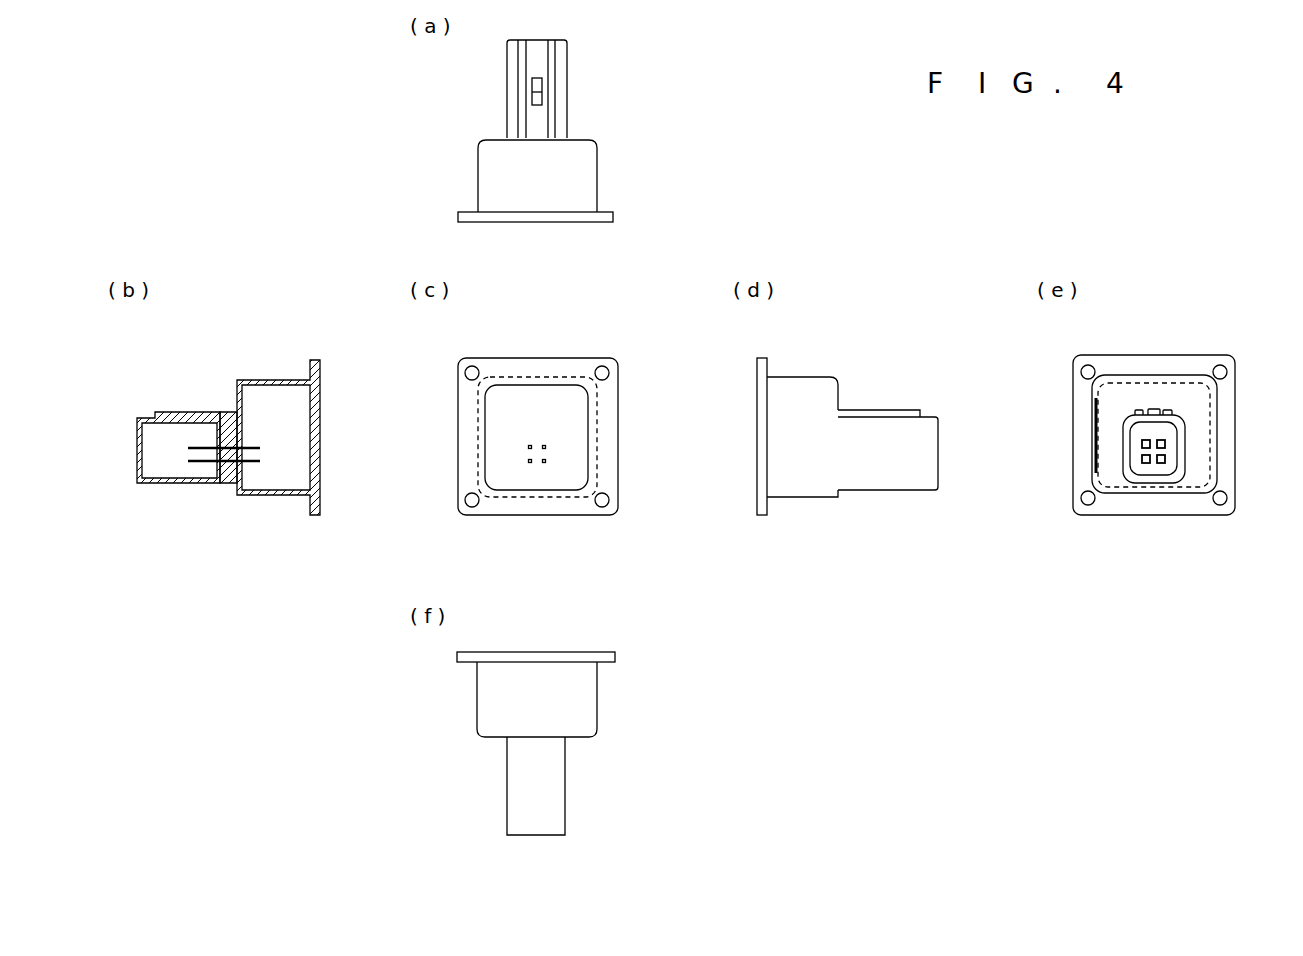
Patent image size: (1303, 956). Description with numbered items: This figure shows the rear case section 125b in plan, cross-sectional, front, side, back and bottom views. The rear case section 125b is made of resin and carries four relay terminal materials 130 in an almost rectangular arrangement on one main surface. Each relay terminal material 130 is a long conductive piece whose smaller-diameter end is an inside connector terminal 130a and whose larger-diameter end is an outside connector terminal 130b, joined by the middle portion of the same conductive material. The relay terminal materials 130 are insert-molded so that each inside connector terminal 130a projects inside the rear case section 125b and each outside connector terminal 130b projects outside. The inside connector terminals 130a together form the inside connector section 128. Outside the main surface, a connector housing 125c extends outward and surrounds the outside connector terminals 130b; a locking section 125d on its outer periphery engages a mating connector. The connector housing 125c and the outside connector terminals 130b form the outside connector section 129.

The rear case section 125b is at (636, 124).
The connector housing 125c is at (567, 87).
The locking section 125d is at (532, 97).
The inside connector section 128 is at (258, 455).
The outside connector section 129 is at (567, 53).
The relay terminal material 130 is at (221, 412).
The inside connector terminal 130a is at (260, 447).
The outside connector terminal 130b is at (188, 461).